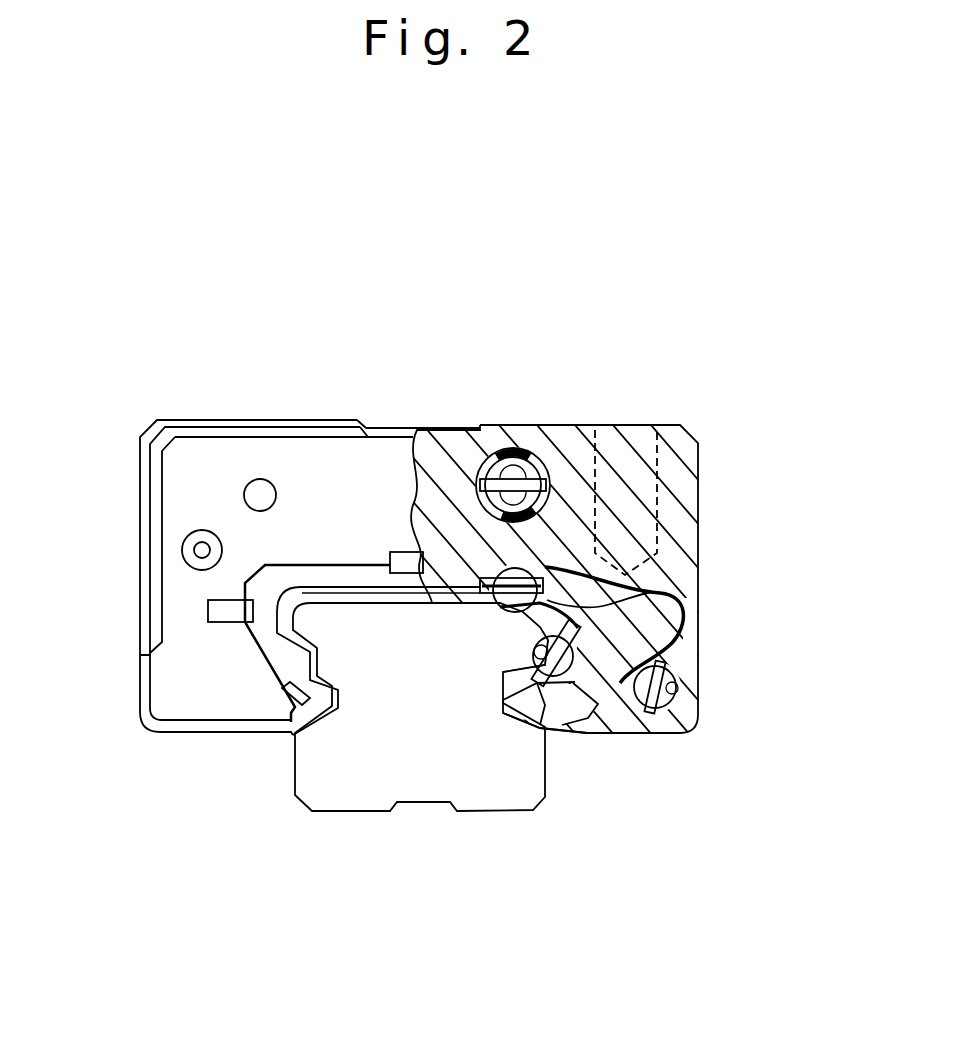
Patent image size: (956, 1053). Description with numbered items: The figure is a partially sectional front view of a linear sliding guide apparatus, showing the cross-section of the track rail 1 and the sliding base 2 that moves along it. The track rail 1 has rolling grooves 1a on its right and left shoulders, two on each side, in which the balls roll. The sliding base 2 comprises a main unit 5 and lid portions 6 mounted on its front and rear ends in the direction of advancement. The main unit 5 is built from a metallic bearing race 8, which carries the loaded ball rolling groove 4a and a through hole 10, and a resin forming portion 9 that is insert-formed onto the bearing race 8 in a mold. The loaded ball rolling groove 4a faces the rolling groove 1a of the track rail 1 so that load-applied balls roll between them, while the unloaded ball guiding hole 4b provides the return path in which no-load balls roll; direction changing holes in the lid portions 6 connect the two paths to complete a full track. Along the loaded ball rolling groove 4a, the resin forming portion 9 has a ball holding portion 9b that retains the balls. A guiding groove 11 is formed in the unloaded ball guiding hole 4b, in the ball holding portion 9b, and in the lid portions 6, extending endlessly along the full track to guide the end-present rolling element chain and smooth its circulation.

The track rail 1 is at (503, 824).
The rolling groove 1a is at (493, 607).
The sliding base 2 is at (276, 412).
The loaded ball rolling groove 4a is at (541, 583).
The unloaded ball guiding hole 4b is at (521, 462).
The main unit 5 is at (712, 477).
The lid portion 6 is at (190, 490).
The bearing race 8 is at (666, 414).
The resin forming portion 9 is at (710, 674).
The ball holding portion 9b is at (567, 634).
The through hole 10 is at (545, 500).
The guiding groove 11 is at (494, 572).